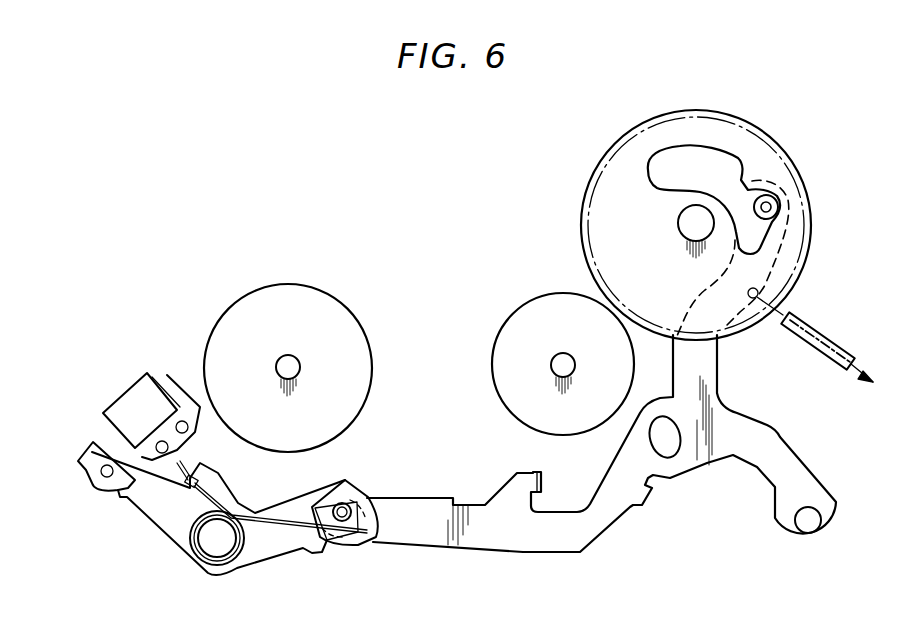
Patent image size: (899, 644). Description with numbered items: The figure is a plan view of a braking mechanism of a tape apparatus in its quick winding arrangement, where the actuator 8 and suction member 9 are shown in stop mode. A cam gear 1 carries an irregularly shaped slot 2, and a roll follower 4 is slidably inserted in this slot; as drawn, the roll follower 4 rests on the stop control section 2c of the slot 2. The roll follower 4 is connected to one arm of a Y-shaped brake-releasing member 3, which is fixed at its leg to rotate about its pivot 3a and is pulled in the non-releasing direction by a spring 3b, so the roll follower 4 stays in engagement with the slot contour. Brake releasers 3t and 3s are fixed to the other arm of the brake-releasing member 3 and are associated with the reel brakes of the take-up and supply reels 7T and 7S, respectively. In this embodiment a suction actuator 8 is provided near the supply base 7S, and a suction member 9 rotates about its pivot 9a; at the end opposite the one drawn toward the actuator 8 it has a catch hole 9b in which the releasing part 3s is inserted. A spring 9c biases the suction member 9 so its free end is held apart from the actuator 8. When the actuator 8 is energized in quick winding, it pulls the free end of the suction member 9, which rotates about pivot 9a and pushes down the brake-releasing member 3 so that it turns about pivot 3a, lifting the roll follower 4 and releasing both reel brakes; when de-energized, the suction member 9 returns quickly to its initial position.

The cam gear 1 is at (672, 128).
The irregularly shaped slot 2 is at (715, 167).
The stop control section 2c is at (784, 189).
The roll follower 4 is at (770, 208).
The brake-releasing member 3 is at (787, 460).
The pivot 3a is at (810, 520).
The spring 3b is at (827, 335).
The brake releaser 3s is at (348, 504).
The brake releaser 3t is at (540, 479).
The supply reel 7S is at (300, 300).
The take-up reel 7T is at (528, 320).
The suction actuator 8 is at (137, 397).
The suction member 9 is at (170, 517).
The pivot 9a is at (217, 545).
The catch hole 9b is at (333, 533).
The spring 9c is at (283, 518).